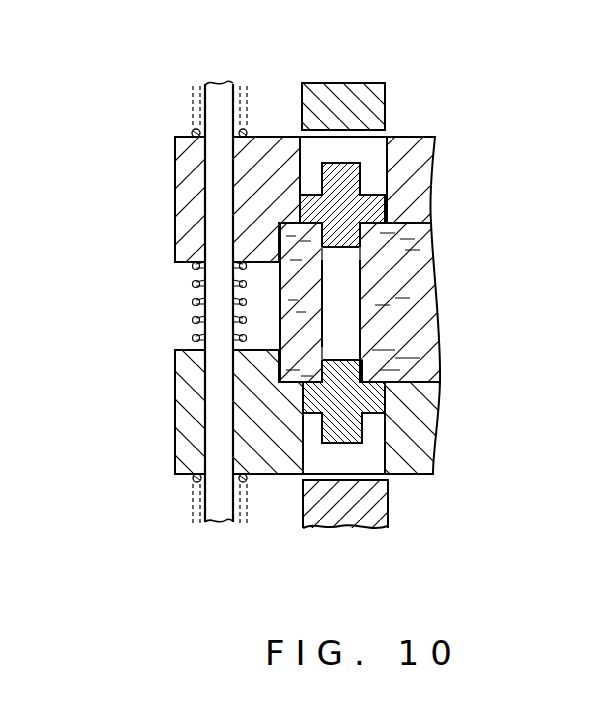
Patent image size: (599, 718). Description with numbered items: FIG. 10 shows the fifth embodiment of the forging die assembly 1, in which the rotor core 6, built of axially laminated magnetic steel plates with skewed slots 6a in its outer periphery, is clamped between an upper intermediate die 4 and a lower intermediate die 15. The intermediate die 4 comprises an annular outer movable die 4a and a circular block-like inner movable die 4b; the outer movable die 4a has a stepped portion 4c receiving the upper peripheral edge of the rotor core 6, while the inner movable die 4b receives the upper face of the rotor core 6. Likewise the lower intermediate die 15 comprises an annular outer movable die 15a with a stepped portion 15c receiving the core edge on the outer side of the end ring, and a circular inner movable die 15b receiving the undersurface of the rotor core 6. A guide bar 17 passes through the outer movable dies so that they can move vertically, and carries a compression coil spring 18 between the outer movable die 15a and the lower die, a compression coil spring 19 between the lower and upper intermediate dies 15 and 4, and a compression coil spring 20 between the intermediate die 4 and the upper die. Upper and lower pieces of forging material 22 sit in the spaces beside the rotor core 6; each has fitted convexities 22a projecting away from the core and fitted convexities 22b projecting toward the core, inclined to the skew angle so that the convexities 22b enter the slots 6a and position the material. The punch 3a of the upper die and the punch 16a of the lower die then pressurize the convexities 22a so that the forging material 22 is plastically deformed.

The forging die assembly 1 is at (165, 149).
The punch 3a is at (386, 105).
The intermediate die 4 is at (175, 203).
The outer movable die 4a is at (175, 172).
The inner movable die 4b is at (386, 157).
The stepped portion 4c is at (300, 236).
The rotor core 6 is at (362, 284).
The skewed slots 6a is at (405, 302).
The lower intermediate die 15 is at (175, 427).
The outer movable die 15a is at (175, 458).
The inner movable die 15b is at (388, 432).
The stepped portion 15c is at (303, 382).
The punch 16a is at (390, 513).
The guide bars 17 is at (216, 83).
The compression coil spring 18 is at (192, 480).
The compression coil spring 19 is at (193, 304).
The compression coil spring 20 is at (194, 131).
The forging material 22 is at (372, 210).
The fitted convexities 22a is at (338, 162).
The fitted convexities 22b is at (362, 248).